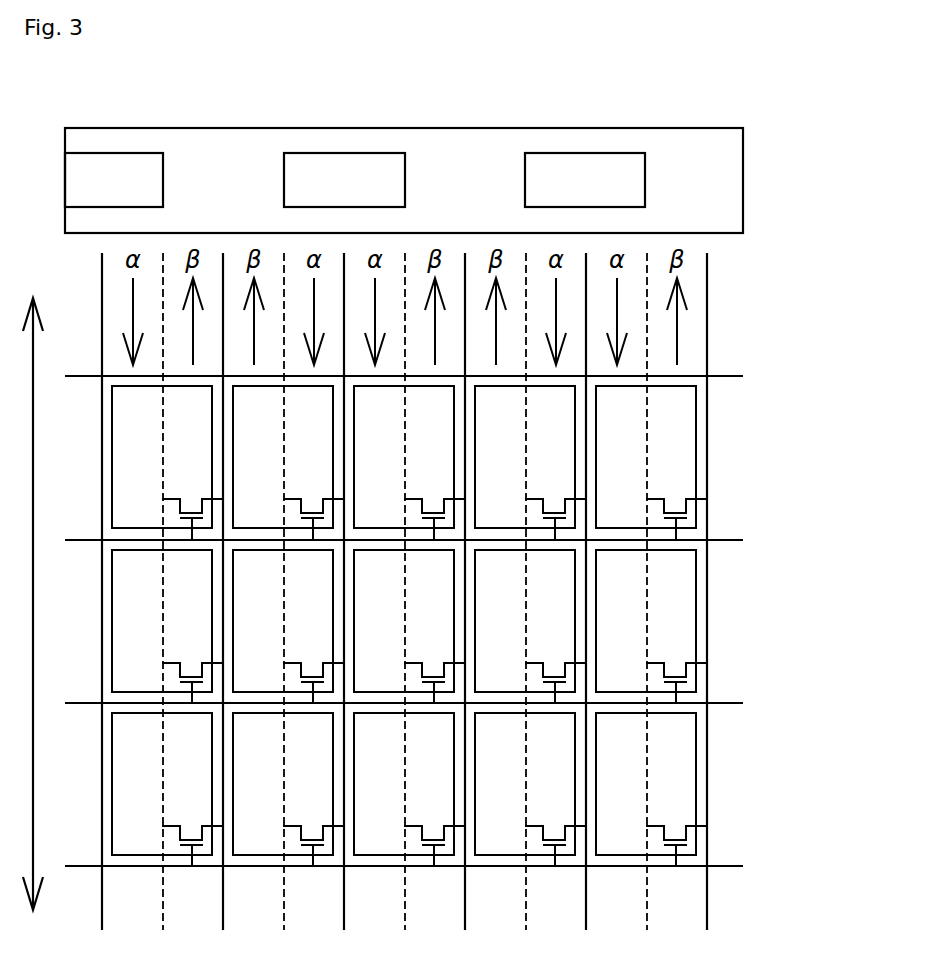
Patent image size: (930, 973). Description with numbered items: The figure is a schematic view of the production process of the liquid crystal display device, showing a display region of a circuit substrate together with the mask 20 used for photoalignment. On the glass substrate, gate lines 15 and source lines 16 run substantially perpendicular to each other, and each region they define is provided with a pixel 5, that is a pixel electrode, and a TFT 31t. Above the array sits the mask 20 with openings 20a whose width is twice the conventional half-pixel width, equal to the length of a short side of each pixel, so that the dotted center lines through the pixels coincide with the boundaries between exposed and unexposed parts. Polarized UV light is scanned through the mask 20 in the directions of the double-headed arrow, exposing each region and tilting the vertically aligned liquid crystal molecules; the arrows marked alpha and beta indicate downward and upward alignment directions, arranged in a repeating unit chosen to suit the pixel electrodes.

The mask 20 is at (728, 177).
The openings 20a is at (623, 163).
The gate lines 15 is at (722, 374).
The source lines 16 is at (707, 903).
The pixel 5 is at (694, 752).
The TFT 31t is at (688, 834).